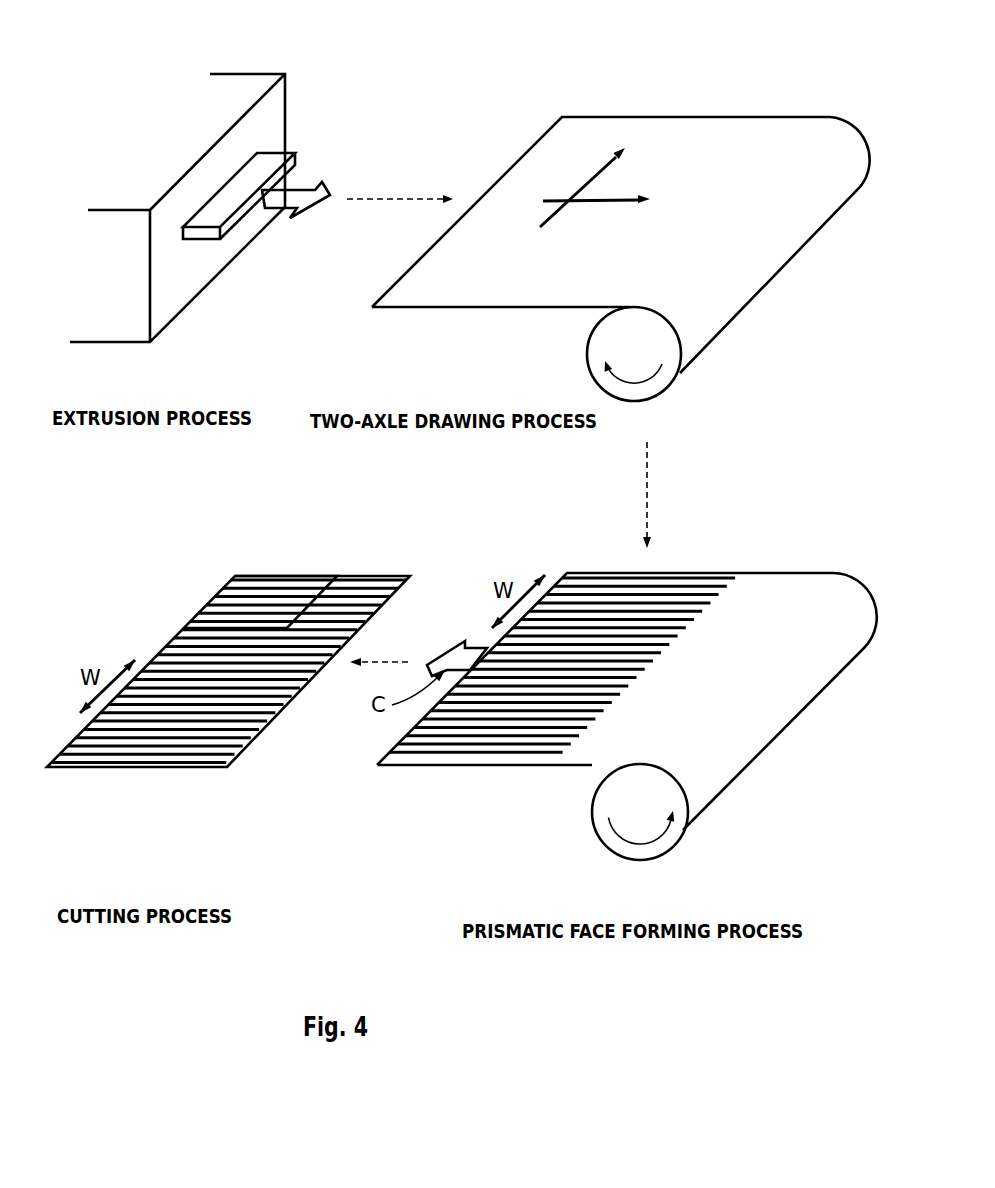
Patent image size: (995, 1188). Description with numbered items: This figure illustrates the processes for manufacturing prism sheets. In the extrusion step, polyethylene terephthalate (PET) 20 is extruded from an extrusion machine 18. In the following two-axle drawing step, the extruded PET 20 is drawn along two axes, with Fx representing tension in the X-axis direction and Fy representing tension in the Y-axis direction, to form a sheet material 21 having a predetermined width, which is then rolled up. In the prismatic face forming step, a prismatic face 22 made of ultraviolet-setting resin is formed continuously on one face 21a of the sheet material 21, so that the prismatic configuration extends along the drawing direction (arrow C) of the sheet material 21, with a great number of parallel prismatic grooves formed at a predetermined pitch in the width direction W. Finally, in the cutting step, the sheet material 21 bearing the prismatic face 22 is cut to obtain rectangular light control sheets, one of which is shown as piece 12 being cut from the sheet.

The extrusion machine 18 is at (248, 92).
The polyethylene terephthalate (PET) 20 is at (277, 163).
The sheet material 21 is at (665, 120).
The face of the sheet material 21a is at (757, 588).
The prismatic face 22 is at (673, 577).
The cut prism sheet piece 12 is at (308, 576).